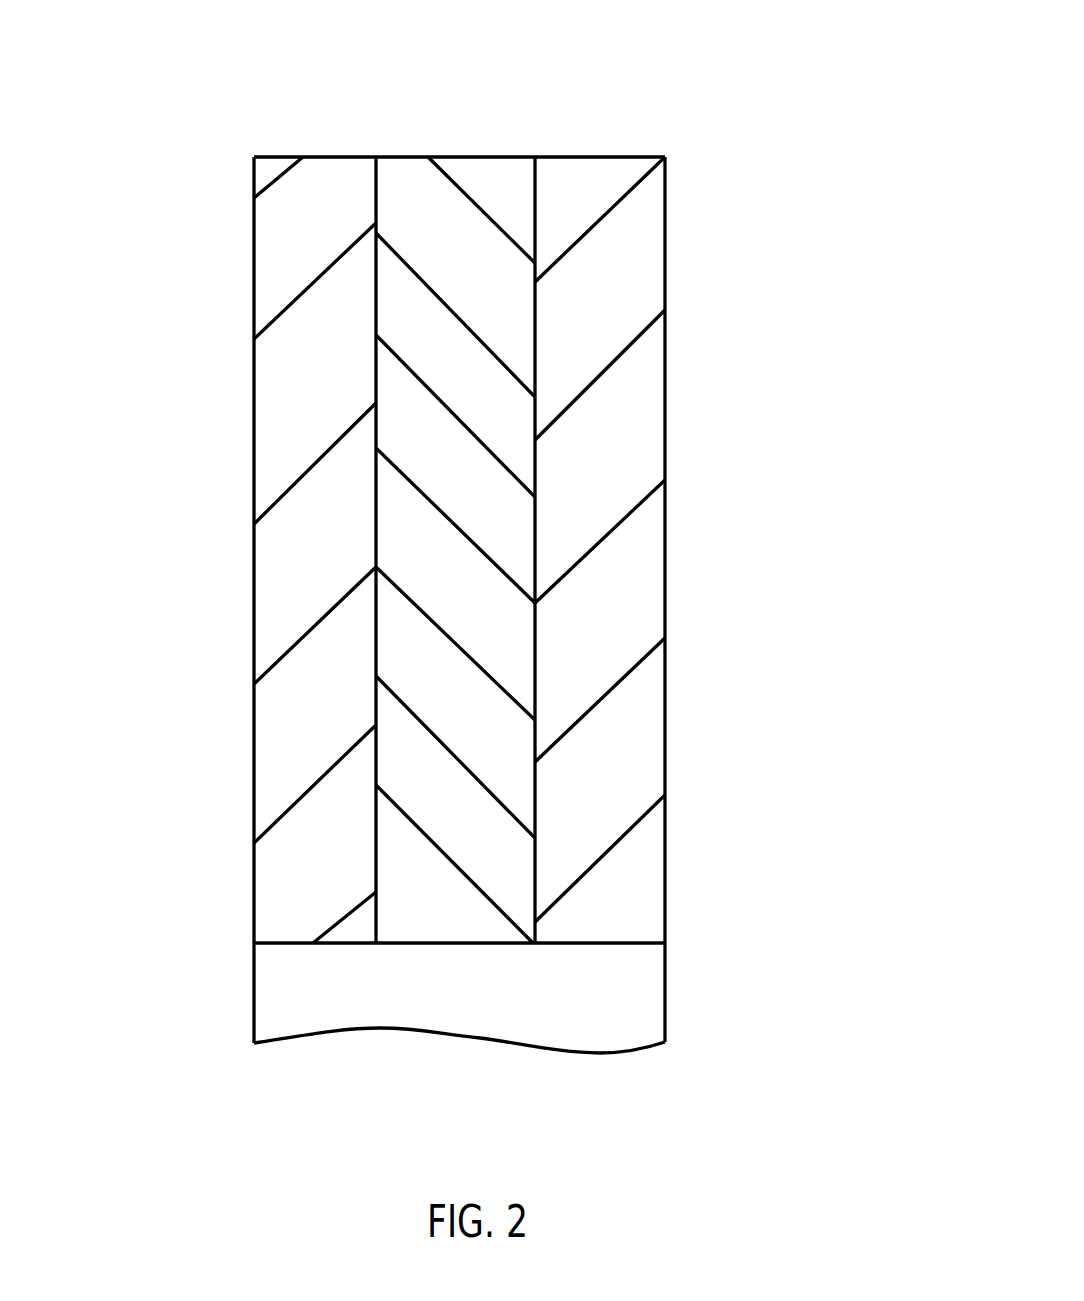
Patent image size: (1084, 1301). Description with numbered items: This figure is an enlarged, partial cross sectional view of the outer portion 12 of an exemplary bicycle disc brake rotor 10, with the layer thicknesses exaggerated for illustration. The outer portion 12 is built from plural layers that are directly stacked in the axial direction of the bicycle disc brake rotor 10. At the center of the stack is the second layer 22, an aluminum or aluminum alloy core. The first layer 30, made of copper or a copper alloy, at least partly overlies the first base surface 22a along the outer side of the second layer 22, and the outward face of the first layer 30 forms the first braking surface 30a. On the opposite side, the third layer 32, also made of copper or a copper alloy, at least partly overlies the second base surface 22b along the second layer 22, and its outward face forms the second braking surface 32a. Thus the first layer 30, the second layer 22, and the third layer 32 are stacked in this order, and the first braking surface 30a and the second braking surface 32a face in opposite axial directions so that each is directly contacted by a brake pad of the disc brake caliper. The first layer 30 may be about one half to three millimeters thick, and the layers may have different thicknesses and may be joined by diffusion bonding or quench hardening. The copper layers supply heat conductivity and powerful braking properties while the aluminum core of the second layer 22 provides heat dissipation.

The bicycle disc brake rotor 10 is at (626, 67).
The outer portion 12 is at (70, 209).
The second layer 22 is at (483, 818).
The first base surface 22a is at (376, 393).
The second base surface 22b is at (535, 327).
The first layer 30 is at (300, 718).
The first braking surface 30a is at (253, 613).
The third layer 32 is at (612, 440).
The second braking surface 32a is at (665, 612).